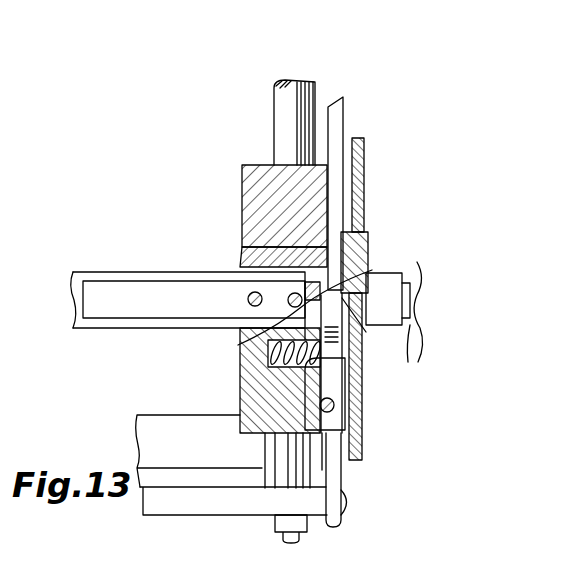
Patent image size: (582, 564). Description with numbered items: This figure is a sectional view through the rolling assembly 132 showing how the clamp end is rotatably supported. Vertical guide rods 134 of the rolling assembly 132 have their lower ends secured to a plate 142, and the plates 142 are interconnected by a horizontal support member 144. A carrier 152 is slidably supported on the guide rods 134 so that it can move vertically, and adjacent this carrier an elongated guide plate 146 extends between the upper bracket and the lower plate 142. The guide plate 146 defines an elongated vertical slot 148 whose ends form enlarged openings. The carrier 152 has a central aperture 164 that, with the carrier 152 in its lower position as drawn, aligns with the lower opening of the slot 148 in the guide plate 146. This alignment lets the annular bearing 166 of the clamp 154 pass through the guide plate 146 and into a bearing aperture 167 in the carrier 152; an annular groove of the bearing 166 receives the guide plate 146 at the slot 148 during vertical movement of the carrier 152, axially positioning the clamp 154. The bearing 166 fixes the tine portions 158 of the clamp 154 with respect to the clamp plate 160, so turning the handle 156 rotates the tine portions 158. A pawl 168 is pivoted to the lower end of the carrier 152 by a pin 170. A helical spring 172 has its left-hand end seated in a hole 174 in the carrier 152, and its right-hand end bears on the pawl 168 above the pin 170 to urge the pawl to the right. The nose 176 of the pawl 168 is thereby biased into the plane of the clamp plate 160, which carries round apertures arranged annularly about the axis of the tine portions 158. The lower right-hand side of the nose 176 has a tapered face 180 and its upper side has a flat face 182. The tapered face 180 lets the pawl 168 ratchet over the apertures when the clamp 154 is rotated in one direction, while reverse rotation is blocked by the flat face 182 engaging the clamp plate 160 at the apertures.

The rolling assembly 132 is at (351, 112).
The guide rods 134 is at (283, 127).
The plates 142 is at (238, 502).
The horizontal support member 144 is at (146, 450).
The guide plate 146 is at (343, 135).
The slot 148 is at (338, 105).
The carrier 152 is at (253, 198).
The clamp 154 is at (373, 241).
The handle 156 is at (406, 327).
The tine portions 158 is at (85, 320).
The clamp plate 160 is at (356, 406).
The central aperture 164 is at (242, 252).
The annular bearing 166 is at (307, 250).
The bearing aperture 167 is at (318, 268).
The pawl 168 is at (280, 380).
The pin 170 is at (333, 412).
The helical spring 172 is at (283, 371).
The hole 174 is at (268, 357).
The nose 176 is at (356, 330).
The tapered face 180 is at (336, 309).
The flat face 182 is at (345, 285).